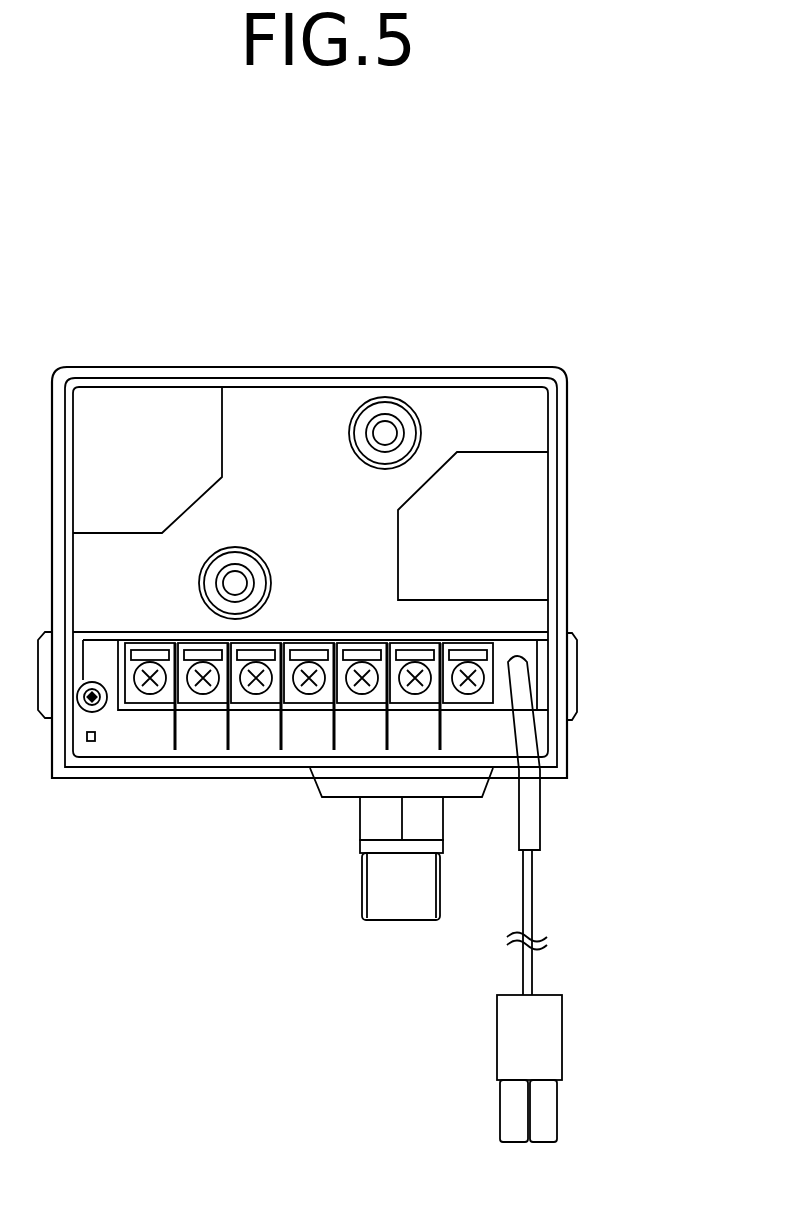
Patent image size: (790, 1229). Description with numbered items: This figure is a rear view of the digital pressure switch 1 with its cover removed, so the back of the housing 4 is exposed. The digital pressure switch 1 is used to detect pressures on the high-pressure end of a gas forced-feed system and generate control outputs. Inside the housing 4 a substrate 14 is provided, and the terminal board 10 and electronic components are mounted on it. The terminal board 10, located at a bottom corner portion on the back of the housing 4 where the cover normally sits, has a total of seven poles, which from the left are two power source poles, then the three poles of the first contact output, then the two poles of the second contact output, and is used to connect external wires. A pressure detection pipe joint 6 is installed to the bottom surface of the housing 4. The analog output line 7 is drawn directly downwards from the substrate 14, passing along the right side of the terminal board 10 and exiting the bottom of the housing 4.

The digital pressure switch 1 is at (334, 548).
The housing 4 is at (445, 367).
The pressure detection pipe joint 6 is at (360, 887).
The analog output line 7 is at (563, 1022).
The terminal board 10 is at (118, 712).
The substrate 14 is at (532, 650).